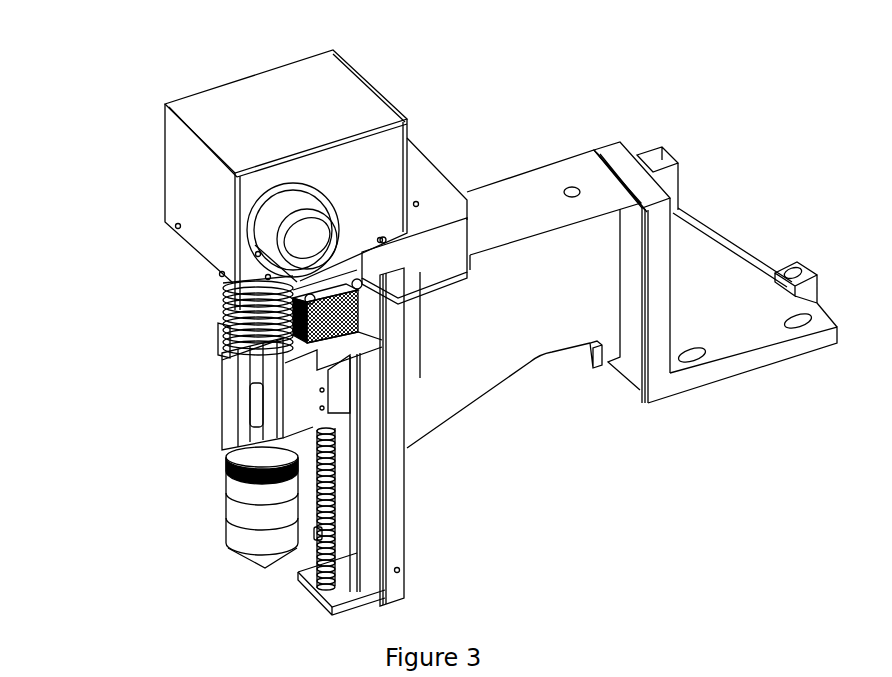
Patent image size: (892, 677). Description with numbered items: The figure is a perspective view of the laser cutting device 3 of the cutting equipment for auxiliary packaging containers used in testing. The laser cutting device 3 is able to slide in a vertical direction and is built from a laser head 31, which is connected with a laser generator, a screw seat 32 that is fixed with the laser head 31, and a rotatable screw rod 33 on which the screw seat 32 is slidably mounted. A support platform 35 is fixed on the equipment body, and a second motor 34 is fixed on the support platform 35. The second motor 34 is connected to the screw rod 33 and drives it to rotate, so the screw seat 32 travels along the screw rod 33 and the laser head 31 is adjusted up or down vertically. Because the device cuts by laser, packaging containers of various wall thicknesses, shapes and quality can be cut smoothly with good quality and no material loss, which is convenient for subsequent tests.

The laser cutting device 3 is at (205, 290).
The laser head 31 is at (235, 529).
The screw seat 32 is at (232, 412).
The screw rod 33 is at (335, 506).
The second motor 34 is at (350, 337).
The support platform 35 is at (523, 192).